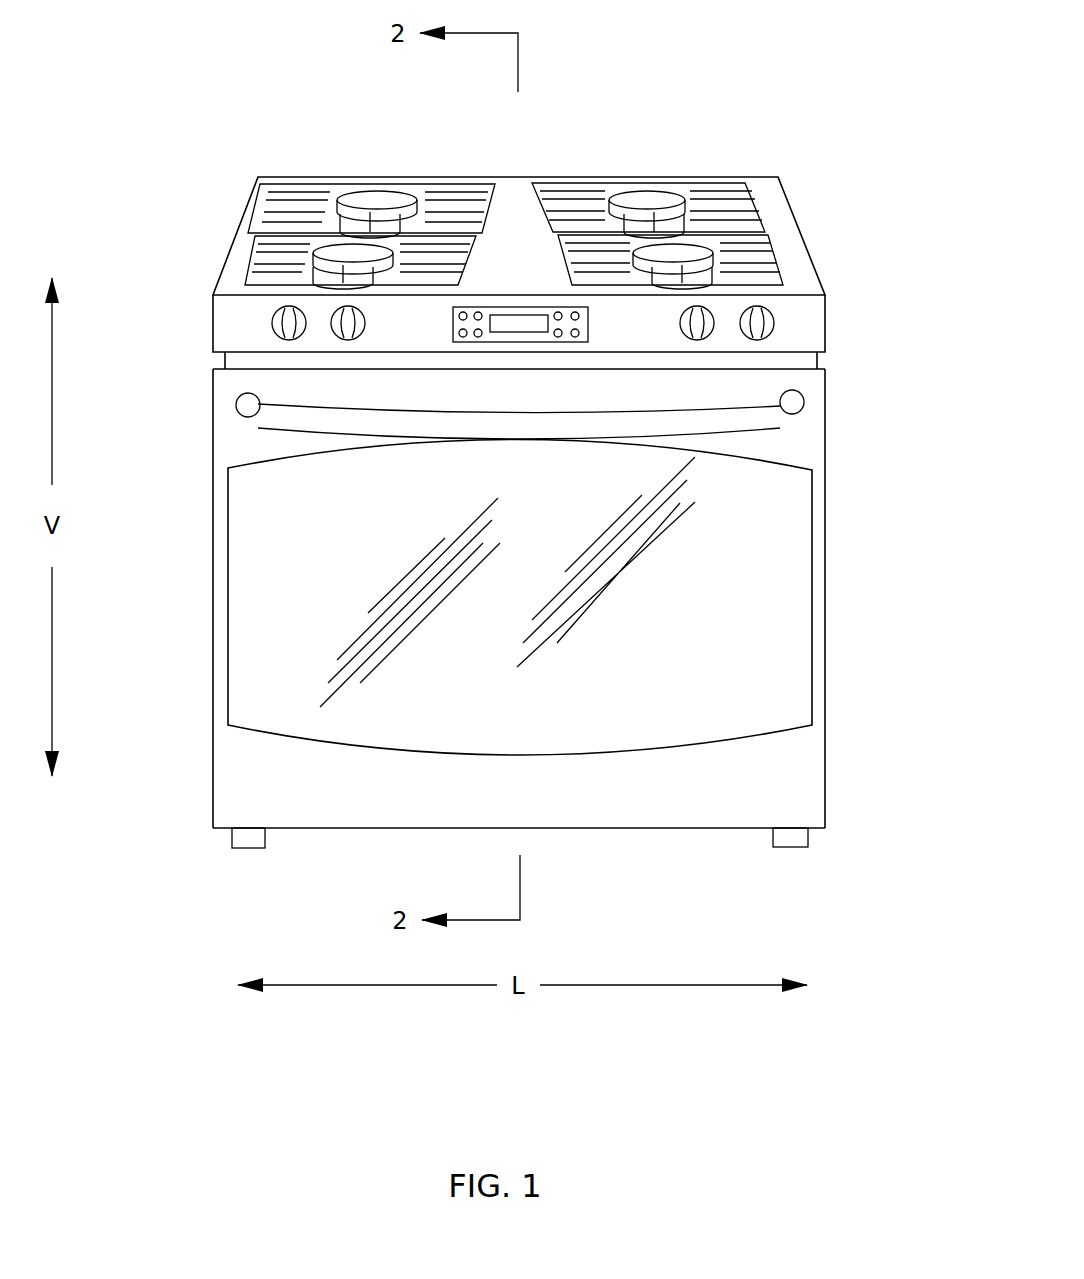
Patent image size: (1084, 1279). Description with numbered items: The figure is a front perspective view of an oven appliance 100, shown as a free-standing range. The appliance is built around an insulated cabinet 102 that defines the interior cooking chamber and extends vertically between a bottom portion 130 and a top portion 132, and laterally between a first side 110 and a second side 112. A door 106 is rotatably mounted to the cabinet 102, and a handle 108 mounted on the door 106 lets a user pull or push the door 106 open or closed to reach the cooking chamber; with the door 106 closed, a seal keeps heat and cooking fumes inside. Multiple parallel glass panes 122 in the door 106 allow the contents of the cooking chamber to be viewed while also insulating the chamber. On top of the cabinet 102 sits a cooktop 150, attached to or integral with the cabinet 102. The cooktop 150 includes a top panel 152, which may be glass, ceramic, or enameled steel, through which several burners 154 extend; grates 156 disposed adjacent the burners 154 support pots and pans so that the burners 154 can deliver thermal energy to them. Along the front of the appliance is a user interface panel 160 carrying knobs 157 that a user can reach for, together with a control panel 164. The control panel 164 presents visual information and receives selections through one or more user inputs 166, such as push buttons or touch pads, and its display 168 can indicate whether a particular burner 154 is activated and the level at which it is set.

The oven appliance 100 is at (866, 148).
The cabinet 102 is at (252, 360).
The door 106 is at (812, 383).
The handle 108 is at (255, 425).
The first side 110 is at (228, 856).
The second side 112 is at (818, 848).
The glass panes 122 is at (780, 633).
The bottom portion 130 is at (853, 823).
The top portion 132 is at (864, 287).
The cooktop 150 is at (650, 142).
The top panel 152 is at (770, 193).
The burners 154 is at (365, 192).
The grates 156 is at (292, 203).
The knobs 157 is at (290, 315).
The user interface panel 160 is at (805, 335).
The control panel 164 is at (477, 354).
The user inputs 166 is at (591, 323).
The display 168 is at (515, 310).